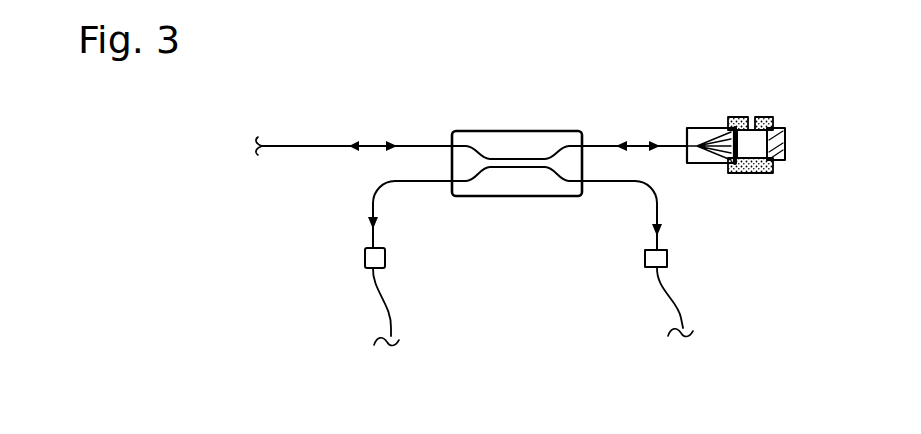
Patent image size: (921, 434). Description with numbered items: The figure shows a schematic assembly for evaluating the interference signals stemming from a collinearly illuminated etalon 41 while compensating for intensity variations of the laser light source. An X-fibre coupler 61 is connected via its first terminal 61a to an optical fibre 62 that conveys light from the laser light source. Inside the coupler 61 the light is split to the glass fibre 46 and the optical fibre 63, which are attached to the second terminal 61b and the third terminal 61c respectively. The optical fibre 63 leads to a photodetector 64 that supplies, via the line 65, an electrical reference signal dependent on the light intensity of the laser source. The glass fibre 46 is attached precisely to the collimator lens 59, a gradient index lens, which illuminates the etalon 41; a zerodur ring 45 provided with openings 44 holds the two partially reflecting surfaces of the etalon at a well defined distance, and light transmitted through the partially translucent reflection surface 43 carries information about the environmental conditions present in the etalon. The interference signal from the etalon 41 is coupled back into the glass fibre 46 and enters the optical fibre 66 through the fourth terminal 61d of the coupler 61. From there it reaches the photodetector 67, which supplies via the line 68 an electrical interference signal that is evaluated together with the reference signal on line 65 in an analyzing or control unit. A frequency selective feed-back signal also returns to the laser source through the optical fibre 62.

The etalon 41 is at (745, 108).
The partially translucent reflection surface 43 is at (786, 135).
The openings 44 is at (753, 117).
The zerodur ring 45 is at (763, 160).
The glass fibre 46 is at (604, 143).
The collimator lens 59 is at (712, 127).
The X-fibre coupler 61 is at (507, 130).
The first terminal 61a is at (449, 142).
The second terminal 61b is at (585, 143).
The third terminal 61c is at (584, 189).
The fourth terminal 61d is at (448, 189).
The optical fibre 62 is at (297, 142).
The optical fibre 63 is at (660, 208).
The photodetector 64 is at (668, 259).
The line 65 is at (684, 318).
The optical fibre 66 is at (369, 203).
The photodetector 67 is at (365, 259).
The line 68 is at (381, 313).